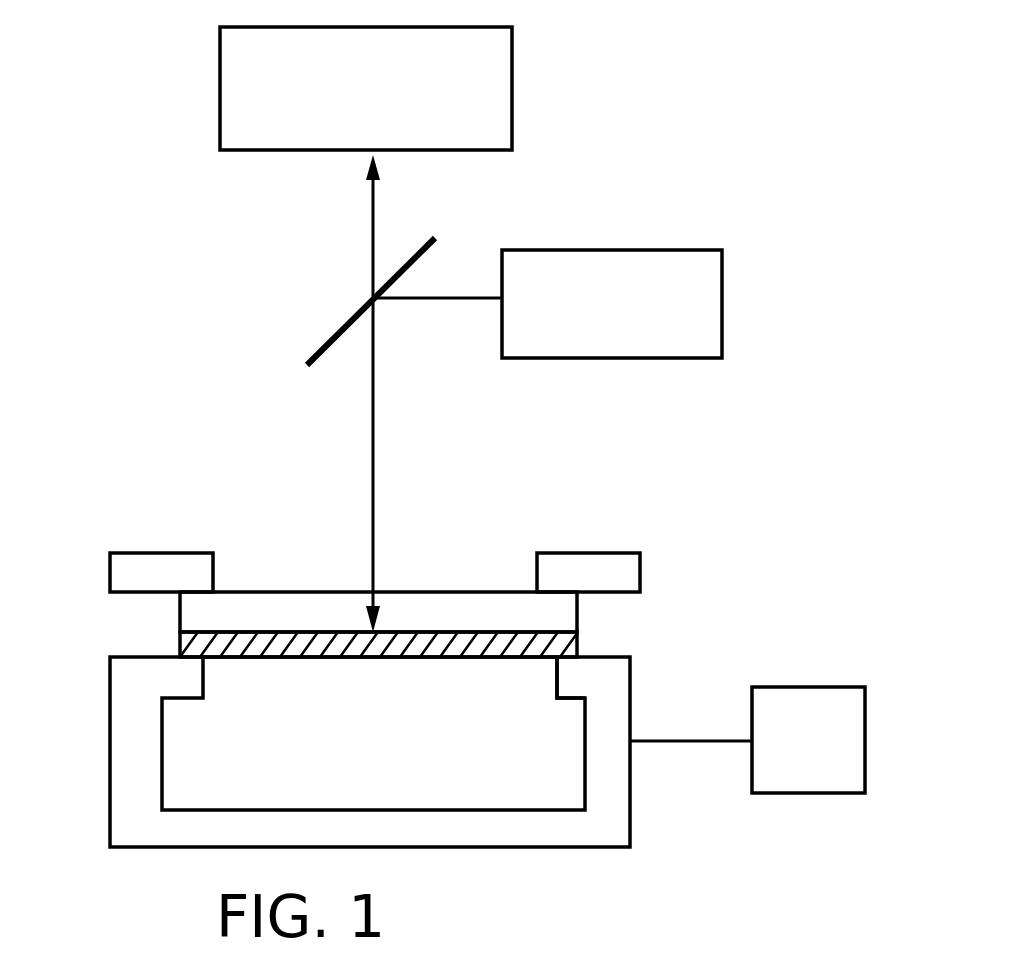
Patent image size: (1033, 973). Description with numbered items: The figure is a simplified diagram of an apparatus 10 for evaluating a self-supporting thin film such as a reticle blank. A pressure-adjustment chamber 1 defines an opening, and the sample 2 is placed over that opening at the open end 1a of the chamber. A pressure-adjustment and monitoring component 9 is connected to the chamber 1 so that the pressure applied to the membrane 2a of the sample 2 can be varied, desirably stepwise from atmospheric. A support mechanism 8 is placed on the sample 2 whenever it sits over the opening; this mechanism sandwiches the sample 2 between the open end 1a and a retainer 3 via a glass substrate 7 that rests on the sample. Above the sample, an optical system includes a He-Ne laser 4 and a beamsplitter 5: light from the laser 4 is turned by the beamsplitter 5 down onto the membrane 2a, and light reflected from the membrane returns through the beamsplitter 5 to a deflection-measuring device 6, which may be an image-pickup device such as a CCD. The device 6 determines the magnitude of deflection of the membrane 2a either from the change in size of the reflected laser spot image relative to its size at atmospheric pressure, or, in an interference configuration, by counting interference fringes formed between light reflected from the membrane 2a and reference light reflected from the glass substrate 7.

The pressure-adjustment chamber 1 is at (630, 765).
The open end 1a is at (568, 680).
The sample 2 is at (185, 648).
The membrane 2a is at (343, 650).
The retainer 3 is at (622, 577).
The He-Ne laser 4 is at (608, 335).
The beamsplitter 5 is at (330, 338).
The deflection-measuring device 6 is at (238, 100).
The glass substrate 7 is at (567, 627).
The support mechanism 8 is at (720, 537).
The pressure-adjustment and monitoring component 9 is at (820, 775).
The apparatus 10 is at (714, 150).